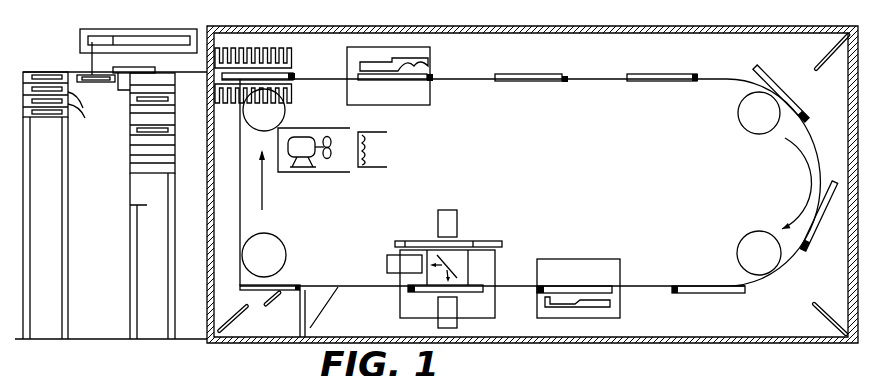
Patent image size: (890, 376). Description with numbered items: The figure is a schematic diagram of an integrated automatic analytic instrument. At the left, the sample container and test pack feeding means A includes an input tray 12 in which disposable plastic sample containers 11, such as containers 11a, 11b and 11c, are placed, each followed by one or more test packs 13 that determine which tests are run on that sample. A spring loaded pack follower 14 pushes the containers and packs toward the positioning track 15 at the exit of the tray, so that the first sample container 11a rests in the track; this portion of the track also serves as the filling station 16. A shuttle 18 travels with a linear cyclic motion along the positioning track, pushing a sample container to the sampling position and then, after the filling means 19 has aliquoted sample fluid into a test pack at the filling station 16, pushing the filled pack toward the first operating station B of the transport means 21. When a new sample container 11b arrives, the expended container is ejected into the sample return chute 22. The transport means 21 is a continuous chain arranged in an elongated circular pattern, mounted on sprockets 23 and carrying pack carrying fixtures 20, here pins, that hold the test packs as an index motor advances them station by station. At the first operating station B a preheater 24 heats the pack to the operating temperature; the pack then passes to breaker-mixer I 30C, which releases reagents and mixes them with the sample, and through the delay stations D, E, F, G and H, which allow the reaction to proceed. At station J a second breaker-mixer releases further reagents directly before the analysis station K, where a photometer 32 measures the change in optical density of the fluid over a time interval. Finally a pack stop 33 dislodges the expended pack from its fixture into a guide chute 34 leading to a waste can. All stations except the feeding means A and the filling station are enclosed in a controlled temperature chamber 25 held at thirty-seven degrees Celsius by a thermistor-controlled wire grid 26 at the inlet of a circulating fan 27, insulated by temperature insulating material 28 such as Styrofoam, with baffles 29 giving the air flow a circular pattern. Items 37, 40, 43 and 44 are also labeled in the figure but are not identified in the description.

The sample containers 11 is at (83, 115).
The first sample container 11a is at (76, 73).
The second sample container 11b is at (175, 103).
The slotted shelf 11c is at (175, 148).
The input tray 12 is at (128, 182).
The test packs 13 is at (663, 82).
The spring loaded pack follower 14 is at (153, 202).
The positioning track 15 is at (125, 93).
The filling station 16 is at (162, 75).
The shuttle 18 is at (127, 84).
The filling means 19 is at (118, 33).
The pack carrying fixtures 20 is at (298, 78).
The transport means 21 is at (345, 82).
The sample return chute 22 is at (50, 177).
The sprockets 23 is at (273, 120).
The preheater 24 is at (278, 71).
The controlled temperature chamber 25 is at (684, 64).
The wire grid 26 is at (373, 150).
The circulating fan 27 is at (316, 150).
The temperature insulating material 28 is at (786, 337).
The baffles 29 is at (815, 70).
The breaker-mixer I 30C is at (433, 69).
The photometer 32 is at (455, 260).
The pack stop 33 is at (262, 293).
The guide chute 34 is at (270, 298).
The formed article 37 is at (597, 305).
The base 40 is at (731, 372).
The base 43 is at (602, 367).
The base 44 is at (119, 367).
The sample container and test pack feeding means A is at (100, 339).
The first operating station B is at (275, 51).
The delay station D is at (540, 74).
The delay station E is at (640, 73).
The delay station F is at (776, 87).
The delay station G is at (820, 216).
The delay station H is at (711, 294).
The station J is at (622, 303).
The analysis station K is at (483, 300).